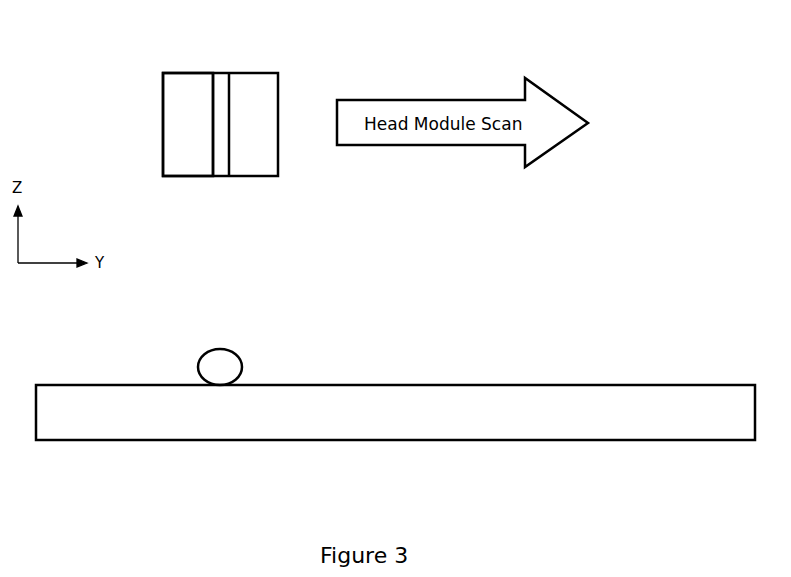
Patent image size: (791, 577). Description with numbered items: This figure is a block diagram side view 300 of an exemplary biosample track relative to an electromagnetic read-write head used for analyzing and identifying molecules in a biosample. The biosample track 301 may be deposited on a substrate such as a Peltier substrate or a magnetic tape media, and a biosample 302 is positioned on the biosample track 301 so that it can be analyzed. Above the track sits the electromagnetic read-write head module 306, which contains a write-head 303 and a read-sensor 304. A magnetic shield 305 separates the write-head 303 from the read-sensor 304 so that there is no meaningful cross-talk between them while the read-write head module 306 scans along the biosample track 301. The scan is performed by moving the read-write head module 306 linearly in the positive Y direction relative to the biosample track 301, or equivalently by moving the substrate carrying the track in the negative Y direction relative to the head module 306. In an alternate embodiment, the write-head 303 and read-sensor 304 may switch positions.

The biosample scanning system 300 is at (672, 42).
The biosample track 301 is at (538, 384).
The biosample 302 is at (238, 353).
The write-head 303 is at (265, 80).
The read-sensor 304 is at (172, 80).
The magnetic shield 305 is at (219, 176).
The electromagnetic read-write head module 306 is at (128, 117).